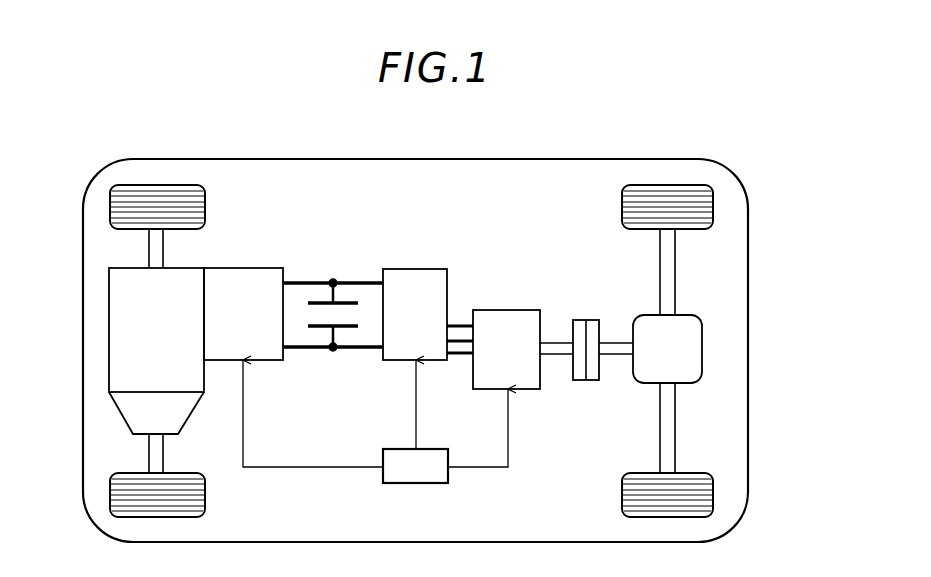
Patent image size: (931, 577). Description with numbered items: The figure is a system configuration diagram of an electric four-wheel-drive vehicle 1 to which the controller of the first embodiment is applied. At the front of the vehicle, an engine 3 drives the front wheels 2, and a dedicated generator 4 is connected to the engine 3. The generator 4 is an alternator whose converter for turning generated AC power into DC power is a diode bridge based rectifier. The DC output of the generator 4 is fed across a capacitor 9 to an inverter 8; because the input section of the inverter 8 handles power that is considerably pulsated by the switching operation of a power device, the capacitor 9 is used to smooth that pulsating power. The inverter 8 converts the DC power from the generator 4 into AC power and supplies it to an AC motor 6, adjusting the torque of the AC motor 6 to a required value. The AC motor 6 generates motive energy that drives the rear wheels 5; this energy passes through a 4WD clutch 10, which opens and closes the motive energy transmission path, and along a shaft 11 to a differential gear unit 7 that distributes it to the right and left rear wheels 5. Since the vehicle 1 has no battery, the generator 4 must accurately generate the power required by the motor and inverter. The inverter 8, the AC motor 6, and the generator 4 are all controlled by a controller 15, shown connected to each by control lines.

The electric four-wheel-drive vehicle 1 is at (517, 159).
The front wheels 2 is at (205, 207).
The engine 3 is at (204, 370).
The generator 4 is at (262, 268).
The rear wheels 5 is at (620, 210).
The AC motor 6 is at (508, 310).
The differential gear unit 7 is at (702, 351).
The inverter 8 is at (417, 269).
The capacitor 9 is at (345, 329).
The 4WD clutch 10 is at (585, 320).
The drive shaft 11 is at (615, 356).
The controller 15 is at (418, 484).